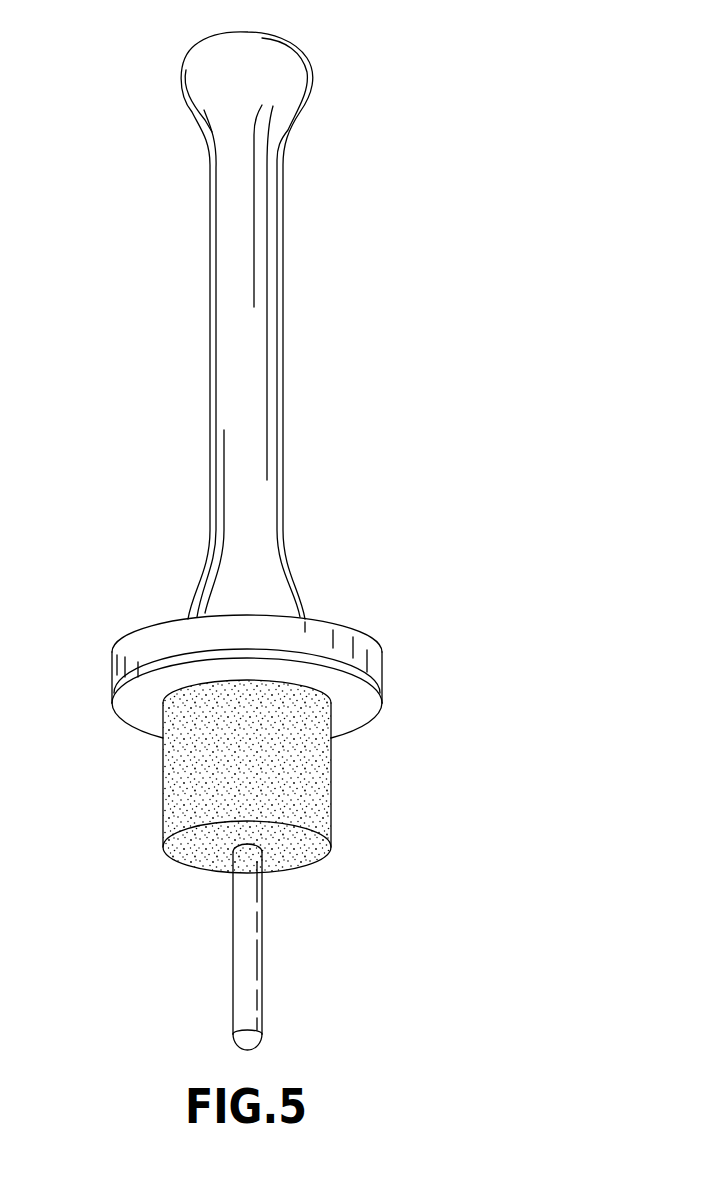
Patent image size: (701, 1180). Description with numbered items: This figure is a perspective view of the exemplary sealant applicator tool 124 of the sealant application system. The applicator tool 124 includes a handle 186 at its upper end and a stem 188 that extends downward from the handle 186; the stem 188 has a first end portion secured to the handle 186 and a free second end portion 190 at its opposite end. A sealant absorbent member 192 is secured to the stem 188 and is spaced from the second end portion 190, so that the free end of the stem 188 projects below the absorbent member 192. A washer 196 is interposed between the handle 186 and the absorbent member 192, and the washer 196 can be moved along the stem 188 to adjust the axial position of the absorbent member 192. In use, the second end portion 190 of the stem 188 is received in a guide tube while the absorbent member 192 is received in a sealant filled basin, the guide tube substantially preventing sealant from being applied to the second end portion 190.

The applicator tool 124 is at (398, 356).
The handle 186 is at (282, 289).
The washer 196 is at (361, 708).
The sealant absorbent member 192 is at (163, 798).
The stem 188 is at (233, 907).
The second end portion 190 is at (233, 988).